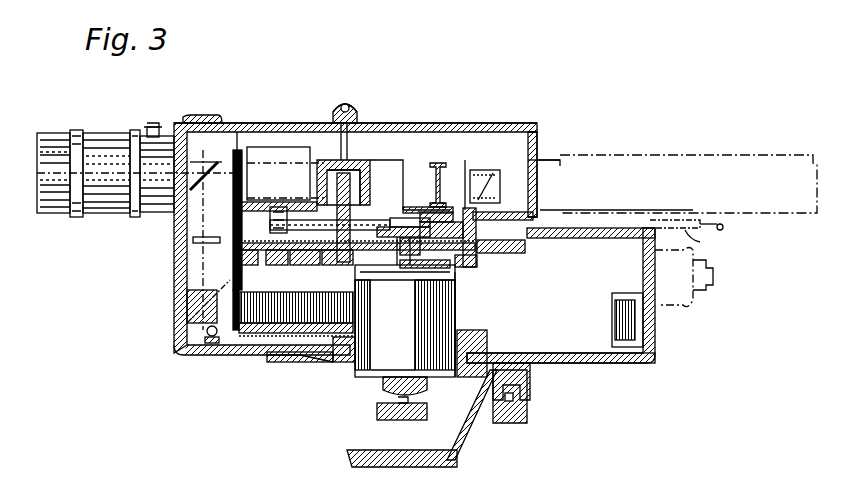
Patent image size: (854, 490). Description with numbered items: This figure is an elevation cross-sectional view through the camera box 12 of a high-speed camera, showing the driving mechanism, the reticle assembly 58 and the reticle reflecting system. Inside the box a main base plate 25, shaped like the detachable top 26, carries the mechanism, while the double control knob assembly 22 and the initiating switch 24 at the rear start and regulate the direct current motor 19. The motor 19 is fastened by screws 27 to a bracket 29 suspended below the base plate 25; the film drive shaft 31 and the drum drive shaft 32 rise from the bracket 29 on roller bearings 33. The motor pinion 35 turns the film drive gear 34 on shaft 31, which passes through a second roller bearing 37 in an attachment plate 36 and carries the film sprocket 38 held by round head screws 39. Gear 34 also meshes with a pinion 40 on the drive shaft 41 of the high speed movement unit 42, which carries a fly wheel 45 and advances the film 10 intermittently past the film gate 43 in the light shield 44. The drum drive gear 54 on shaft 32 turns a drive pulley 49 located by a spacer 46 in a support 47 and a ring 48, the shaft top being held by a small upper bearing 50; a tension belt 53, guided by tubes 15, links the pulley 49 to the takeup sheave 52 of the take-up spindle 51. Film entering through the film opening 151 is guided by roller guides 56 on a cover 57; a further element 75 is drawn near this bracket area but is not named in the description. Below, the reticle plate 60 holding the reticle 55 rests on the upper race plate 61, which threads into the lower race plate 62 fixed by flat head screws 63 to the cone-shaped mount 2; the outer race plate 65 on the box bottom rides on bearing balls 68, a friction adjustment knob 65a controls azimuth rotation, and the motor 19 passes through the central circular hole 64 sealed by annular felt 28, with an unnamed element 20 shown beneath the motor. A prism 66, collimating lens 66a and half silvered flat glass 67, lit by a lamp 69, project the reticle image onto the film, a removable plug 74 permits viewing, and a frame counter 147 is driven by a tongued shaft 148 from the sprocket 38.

The cone-shaped mount 2 is at (457, 460).
The film 10 is at (487, 172).
The camera box 12 is at (174, 298).
The tubes 15 is at (537, 195).
The motor 19 is at (400, 329).
The mounting foot 20 is at (377, 412).
The double control knob assembly 22 is at (716, 295).
The initiating switch 24 is at (655, 333).
The main base plate 25 is at (500, 212).
The detachable top 26 is at (445, 123).
The screws 27 is at (382, 272).
The annular piece of felt 28 is at (487, 335).
The bracket 29 is at (456, 285).
The film drive shaft 31 is at (318, 195).
The drum drive shaft 32 is at (478, 258).
The roller bearings 33 is at (338, 267).
The film drive gear 34 is at (377, 238).
The motor pinion 35 is at (393, 238).
The attachment plate 36 is at (375, 168).
The second roller bearing 37 is at (312, 232).
The film sprocket 38 is at (362, 180).
The round head screws 39 is at (370, 133).
The pinion 40 is at (272, 238).
The drive shaft 41 is at (272, 192).
The high speed movement unit 42 is at (285, 181).
The film gate 43 is at (118, 213).
The light shield 44 is at (245, 160).
The fly wheel 45 is at (295, 267).
The spacer 46 is at (478, 238).
The support 47 is at (414, 207).
The ring 48 is at (455, 215).
The drive pulley 49 is at (505, 238).
The small upper bearing 50 is at (480, 170).
The take-up spindle 51 is at (700, 242).
The takeup sheave 52 is at (710, 232).
The tension belt 53 is at (600, 210).
The drum drive gear 54 is at (512, 252).
The reticle 55 is at (235, 280).
The roller guides 56 is at (452, 158).
The cover 57 is at (436, 200).
The reticle assembly 58 is at (293, 313).
The reticle plate 60 is at (268, 354).
The upper race plate 61 is at (493, 350).
The lower race plate 62 is at (270, 362).
The flat head screws 63 is at (303, 364).
The central circular hole 64 is at (463, 333).
The outer race plate 65 is at (343, 364).
The friction adjustment knob 65a is at (527, 420).
The 45° prism 66 is at (200, 305).
The collimating lens 66a is at (198, 243).
The half silvered optically flat glass 67 is at (174, 130).
The bearing balls 68 is at (348, 380).
The lamp 69 is at (193, 352).
The removable plug 74 is at (210, 115).
The plate 75 is at (410, 215).
The frame counter 147 is at (349, 104).
The tongued shaft 148 is at (336, 118).
The film opening 151 is at (537, 180).